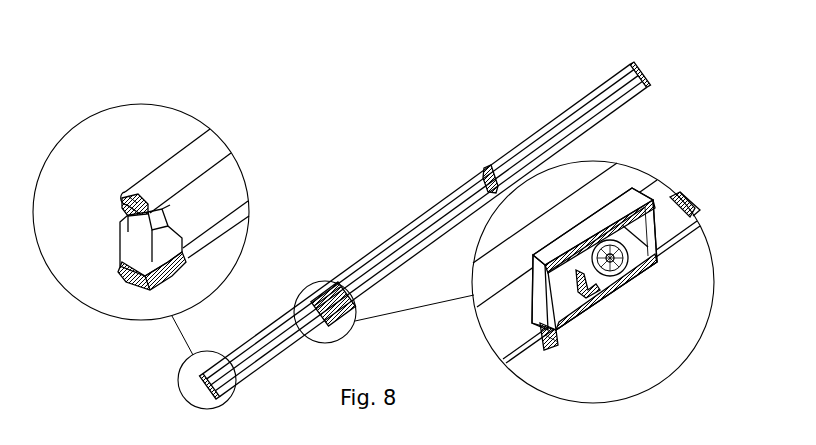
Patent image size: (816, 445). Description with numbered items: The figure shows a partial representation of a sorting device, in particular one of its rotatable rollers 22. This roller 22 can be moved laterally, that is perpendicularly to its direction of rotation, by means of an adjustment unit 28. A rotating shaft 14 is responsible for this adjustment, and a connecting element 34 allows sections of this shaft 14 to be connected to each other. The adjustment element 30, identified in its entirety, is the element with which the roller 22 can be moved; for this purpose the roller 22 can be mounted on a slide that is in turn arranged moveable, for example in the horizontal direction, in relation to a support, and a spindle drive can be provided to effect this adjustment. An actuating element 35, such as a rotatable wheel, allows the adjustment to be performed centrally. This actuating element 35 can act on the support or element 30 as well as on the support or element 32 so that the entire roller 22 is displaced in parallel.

The rotating shaft 14 is at (472, 205).
The rotatable roller 22 is at (420, 218).
The adjustment unit 28 is at (313, 290).
The adjustment element 30 is at (115, 212).
The support or element 32 is at (490, 183).
The connecting element 34 is at (532, 161).
The actuating element 35 is at (640, 277).